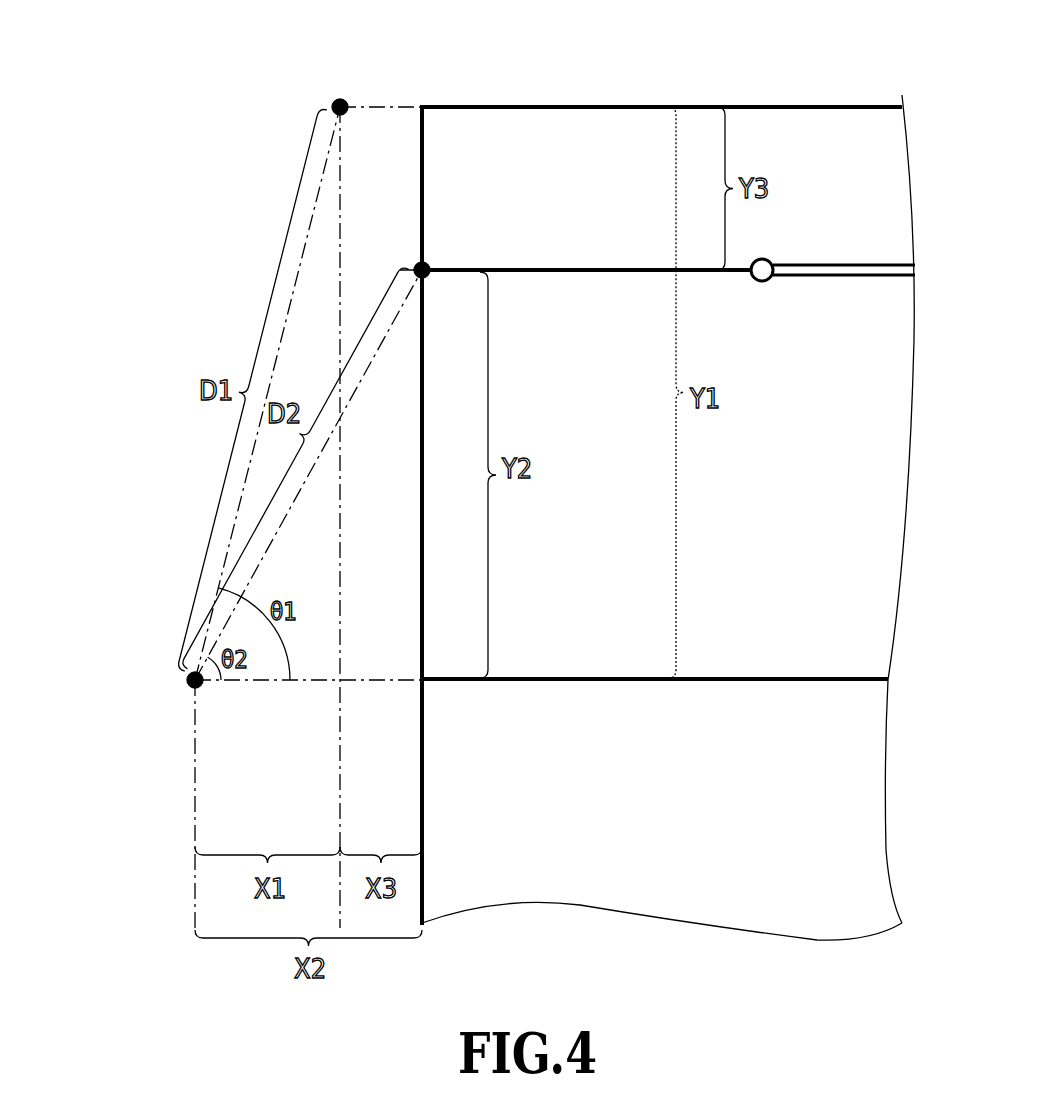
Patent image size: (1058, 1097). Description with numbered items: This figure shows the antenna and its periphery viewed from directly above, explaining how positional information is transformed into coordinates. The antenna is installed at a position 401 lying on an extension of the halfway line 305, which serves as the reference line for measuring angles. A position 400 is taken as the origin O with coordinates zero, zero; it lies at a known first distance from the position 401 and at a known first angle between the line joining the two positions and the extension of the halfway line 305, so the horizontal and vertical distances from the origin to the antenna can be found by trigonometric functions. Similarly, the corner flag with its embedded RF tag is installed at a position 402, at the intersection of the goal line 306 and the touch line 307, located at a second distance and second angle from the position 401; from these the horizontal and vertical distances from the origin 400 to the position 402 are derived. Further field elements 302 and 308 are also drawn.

The position of origin O 400 is at (340, 99).
The position at which the antenna is installed 401 is at (189, 680).
The position of the RF tag 402 is at (424, 266).
The goal 302 is at (846, 264).
The halfway line 305 is at (610, 677).
The goal line 306 is at (610, 273).
The touch line 307 is at (425, 800).
The touch line 308 is at (610, 107).